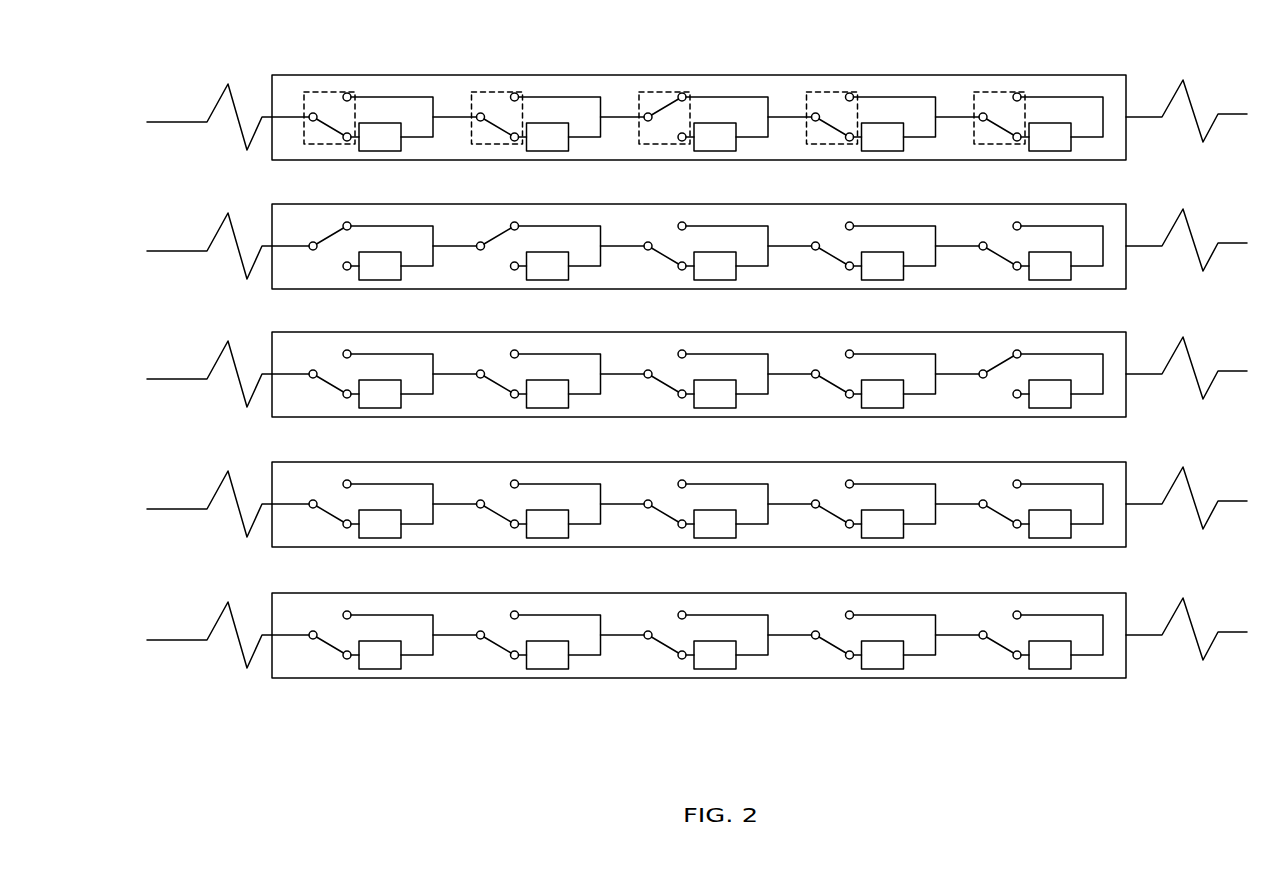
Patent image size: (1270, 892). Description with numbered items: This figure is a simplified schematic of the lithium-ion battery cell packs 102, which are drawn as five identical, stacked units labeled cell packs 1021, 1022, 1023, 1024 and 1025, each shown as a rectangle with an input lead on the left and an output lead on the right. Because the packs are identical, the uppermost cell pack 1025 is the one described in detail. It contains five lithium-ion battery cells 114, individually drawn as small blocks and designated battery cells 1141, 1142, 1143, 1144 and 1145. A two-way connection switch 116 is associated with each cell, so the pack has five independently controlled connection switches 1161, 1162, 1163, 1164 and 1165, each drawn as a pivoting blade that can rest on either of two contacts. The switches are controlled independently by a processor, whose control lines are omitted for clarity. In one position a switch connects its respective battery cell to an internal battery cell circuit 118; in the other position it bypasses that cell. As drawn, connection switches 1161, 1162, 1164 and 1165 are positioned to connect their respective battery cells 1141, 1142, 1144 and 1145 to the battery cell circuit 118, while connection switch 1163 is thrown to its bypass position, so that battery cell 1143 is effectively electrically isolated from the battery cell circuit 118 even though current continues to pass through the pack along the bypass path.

The lithium-ion battery cell pack 102 is at (697, 356).
The lithium-ion battery cell pack 1021 is at (1118, 593).
The lithium-ion battery cell pack 1022 is at (1118, 462).
The lithium-ion battery cell pack 1023 is at (1110, 332).
The lithium-ion battery cell pack 1024 is at (1110, 204).
The lithium-ion battery cell pack 1025 is at (1110, 75).
The lithium-ion battery cell 114 is at (723, 163).
The lithium-ion battery cell 1141 is at (377, 151).
The lithium-ion battery cell 1142 is at (544, 151).
The lithium-ion battery cell 1143 is at (712, 151).
The lithium-ion battery cell 1144 is at (880, 151).
The lithium-ion battery cell 1145 is at (1047, 151).
The two-way connection switch 116 is at (672, 89).
The two-way connection switch 1161 is at (320, 91).
The two-way connection switch 1162 is at (488, 91).
The two-way connection switch 1163 is at (655, 91).
The two-way connection switch 1164 is at (822, 91).
The two-way connection switch 1165 is at (990, 91).
The internal battery cell circuit 118 is at (407, 97).